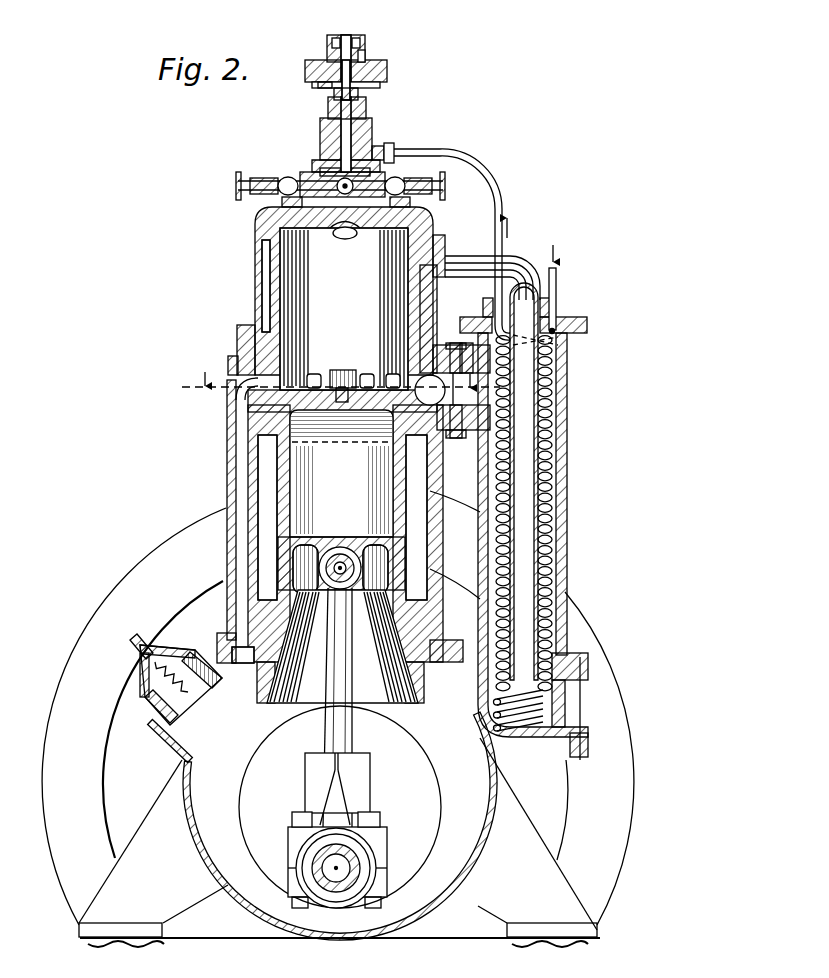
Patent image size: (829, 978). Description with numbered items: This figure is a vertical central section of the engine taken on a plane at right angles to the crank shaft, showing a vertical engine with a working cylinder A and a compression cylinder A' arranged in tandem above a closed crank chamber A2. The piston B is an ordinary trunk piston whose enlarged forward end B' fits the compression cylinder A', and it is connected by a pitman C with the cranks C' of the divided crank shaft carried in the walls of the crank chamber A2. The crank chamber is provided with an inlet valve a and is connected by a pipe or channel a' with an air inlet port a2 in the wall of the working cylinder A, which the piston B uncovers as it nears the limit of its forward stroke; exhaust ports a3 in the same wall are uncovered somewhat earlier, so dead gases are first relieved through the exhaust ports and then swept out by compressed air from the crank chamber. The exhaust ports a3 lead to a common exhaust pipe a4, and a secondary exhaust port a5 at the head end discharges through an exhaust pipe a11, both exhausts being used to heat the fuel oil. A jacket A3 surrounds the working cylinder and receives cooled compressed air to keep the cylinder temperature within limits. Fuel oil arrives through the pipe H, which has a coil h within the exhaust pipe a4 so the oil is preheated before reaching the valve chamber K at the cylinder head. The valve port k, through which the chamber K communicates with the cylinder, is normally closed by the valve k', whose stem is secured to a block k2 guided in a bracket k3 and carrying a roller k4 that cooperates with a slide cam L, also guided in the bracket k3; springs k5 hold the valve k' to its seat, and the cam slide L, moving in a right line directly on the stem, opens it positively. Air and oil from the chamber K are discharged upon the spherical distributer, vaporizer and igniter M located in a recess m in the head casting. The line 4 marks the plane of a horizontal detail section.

The slide cam L is at (332, 67).
The block k2 is at (337, 38).
The roller k4 is at (355, 38).
The bracket k3 is at (364, 45).
The spring k5 is at (327, 84).
The valve k' is at (323, 120).
The valve chamber K is at (367, 144).
The distributer, vaporizer and igniter M is at (330, 173).
The valve port k is at (318, 168).
The pipe H is at (503, 198).
The recess m is at (352, 208).
The secondary exhaust port a5 is at (343, 240).
The jacket A3 is at (268, 277).
The working cylinder A is at (372, 298).
The exhaust ports a3 is at (413, 382).
The air inlet port a2 is at (277, 380).
The section line 4— 4 is at (335, 386).
The exhaust pipe a11 is at (517, 273).
The exhaust pipe a4 is at (552, 404).
The pipe or channel a' is at (204, 521).
The piston B is at (341, 473).
The compression cylinder A' is at (410, 535).
The coil h is at (549, 533).
The inlet valve a is at (162, 698).
The enlarged forward end B' is at (342, 620).
The pitman C is at (319, 707).
The cranks C' is at (324, 830).
The crank chamber A2 is at (340, 823).